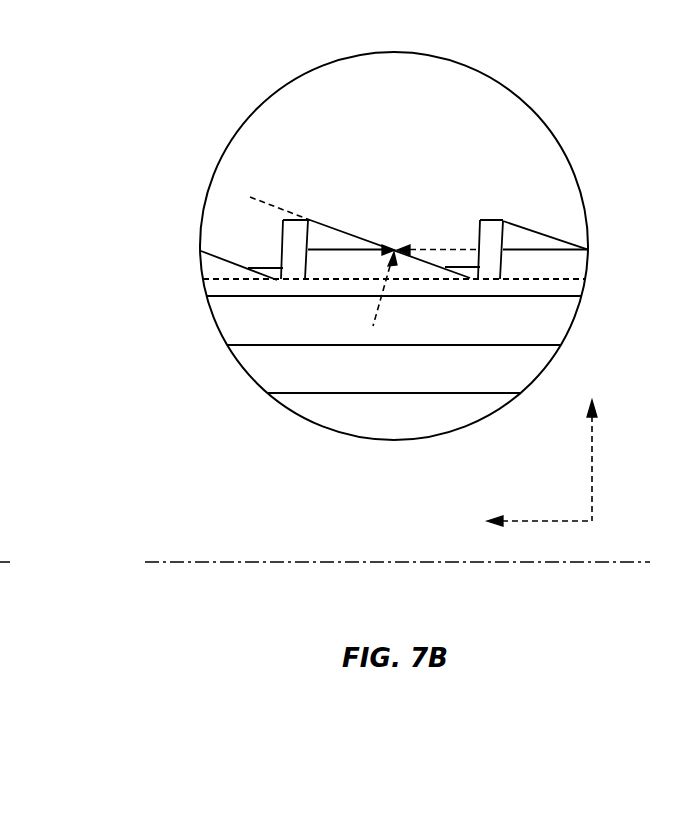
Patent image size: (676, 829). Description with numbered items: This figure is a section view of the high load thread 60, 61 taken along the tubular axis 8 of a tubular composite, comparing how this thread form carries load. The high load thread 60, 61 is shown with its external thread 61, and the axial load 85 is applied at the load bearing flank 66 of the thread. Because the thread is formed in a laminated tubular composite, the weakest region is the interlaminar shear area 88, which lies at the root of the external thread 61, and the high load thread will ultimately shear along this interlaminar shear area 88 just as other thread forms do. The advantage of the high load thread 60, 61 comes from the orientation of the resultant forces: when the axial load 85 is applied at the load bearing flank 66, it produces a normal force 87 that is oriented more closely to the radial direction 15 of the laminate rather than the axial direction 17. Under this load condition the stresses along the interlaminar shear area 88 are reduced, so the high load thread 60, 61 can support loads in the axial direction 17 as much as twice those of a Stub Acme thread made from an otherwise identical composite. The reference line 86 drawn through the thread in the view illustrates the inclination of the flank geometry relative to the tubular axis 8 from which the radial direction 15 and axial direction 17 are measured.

The tubular axis 8 is at (613, 562).
The radial direction 15 is at (592, 437).
The axial direction 17 is at (522, 521).
The high load thread 60 is at (490, 113).
The external thread 61 is at (297, 393).
The load bearing flank 66 is at (453, 278).
The axial load 85 is at (453, 249).
The inclined reference line 86 is at (270, 205).
The normal force 87 is at (375, 305).
The interlaminar shear area 88 is at (562, 278).